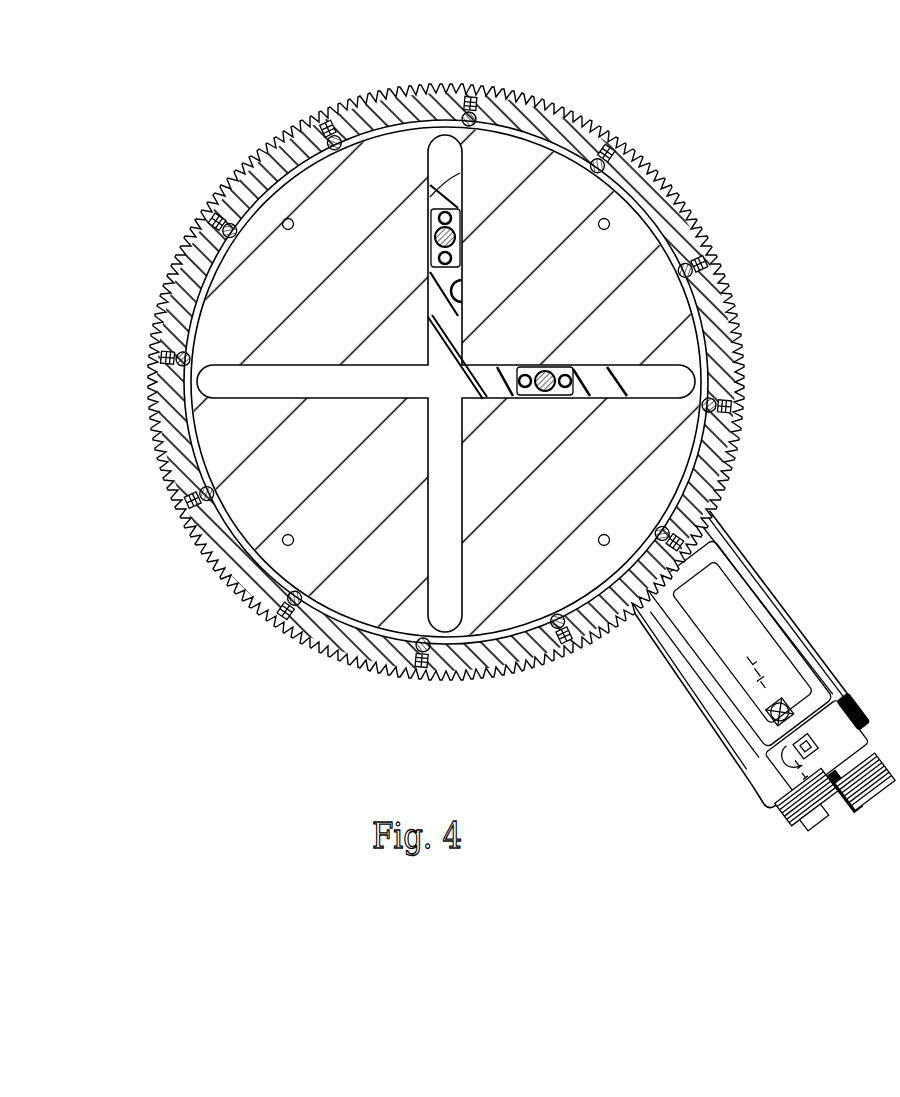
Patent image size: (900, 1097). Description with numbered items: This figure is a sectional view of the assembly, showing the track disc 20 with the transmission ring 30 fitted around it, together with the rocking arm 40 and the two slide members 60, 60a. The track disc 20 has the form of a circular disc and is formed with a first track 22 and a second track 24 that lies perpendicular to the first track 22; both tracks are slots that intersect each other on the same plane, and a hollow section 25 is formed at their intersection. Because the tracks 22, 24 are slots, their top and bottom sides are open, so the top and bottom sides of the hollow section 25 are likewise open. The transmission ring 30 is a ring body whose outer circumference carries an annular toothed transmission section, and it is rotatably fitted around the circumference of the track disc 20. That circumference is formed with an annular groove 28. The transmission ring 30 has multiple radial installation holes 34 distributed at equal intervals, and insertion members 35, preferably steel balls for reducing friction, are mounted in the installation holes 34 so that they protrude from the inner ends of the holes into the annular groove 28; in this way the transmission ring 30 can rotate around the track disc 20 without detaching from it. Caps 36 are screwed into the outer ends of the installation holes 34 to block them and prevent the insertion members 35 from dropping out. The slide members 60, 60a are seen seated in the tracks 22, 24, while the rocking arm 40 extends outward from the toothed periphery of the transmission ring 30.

The track disc 20 is at (446, 338).
The first track 22 is at (442, 537).
The second track 24 is at (318, 388).
The hollow section 25 is at (443, 384).
The annular groove 28 is at (540, 140).
The transmission ring 30 is at (494, 360).
The installation holes 34 is at (622, 160).
The insertion members 35 is at (228, 234).
The caps 36 is at (590, 162).
The rocking arm 40 is at (684, 737).
The slide member 60 is at (436, 244).
The slide member 60a is at (548, 394).